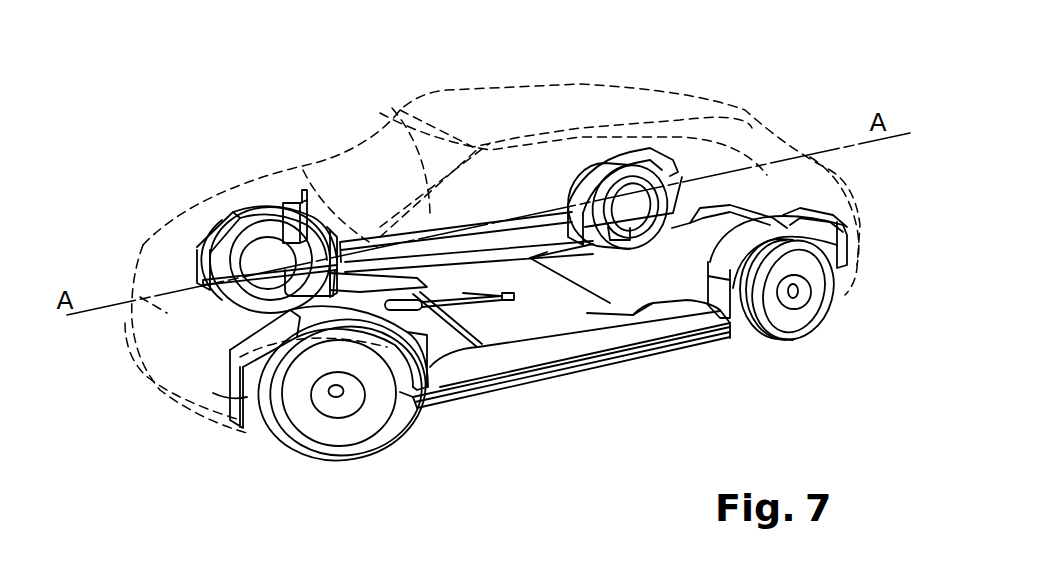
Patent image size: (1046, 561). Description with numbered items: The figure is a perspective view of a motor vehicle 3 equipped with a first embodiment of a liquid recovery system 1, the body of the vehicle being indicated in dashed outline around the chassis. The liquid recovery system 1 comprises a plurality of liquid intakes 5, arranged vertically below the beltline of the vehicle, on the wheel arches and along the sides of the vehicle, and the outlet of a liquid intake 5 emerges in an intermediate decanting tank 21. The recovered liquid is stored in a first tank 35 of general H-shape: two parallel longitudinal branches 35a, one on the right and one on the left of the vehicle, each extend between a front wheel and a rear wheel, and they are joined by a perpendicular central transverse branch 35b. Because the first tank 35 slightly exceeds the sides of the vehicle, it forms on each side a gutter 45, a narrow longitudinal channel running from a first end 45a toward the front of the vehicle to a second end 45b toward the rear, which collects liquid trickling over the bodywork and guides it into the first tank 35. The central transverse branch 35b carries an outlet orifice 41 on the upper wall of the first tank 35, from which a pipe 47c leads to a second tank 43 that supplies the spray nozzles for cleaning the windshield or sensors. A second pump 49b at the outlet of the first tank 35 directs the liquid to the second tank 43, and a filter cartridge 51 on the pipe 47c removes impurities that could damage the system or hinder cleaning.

The liquid recovery system 1 is at (615, 427).
The motor vehicle 3 is at (718, 107).
The liquid intake 5 is at (208, 222).
The intermediate decanting tank 21 is at (205, 268).
The first tank 35 is at (580, 237).
The longitudinal branch 35a is at (547, 250).
The central transverse branch 35b is at (653, 303).
The outlet orifice 41 is at (511, 297).
The second tank 43 is at (293, 213).
The gutter 45 is at (615, 427).
The first end 45a is at (417, 420).
The second end 45b is at (717, 343).
The pipe 47c is at (463, 293).
The second pump 49b is at (514, 296).
The filter cartridge 51 is at (400, 377).